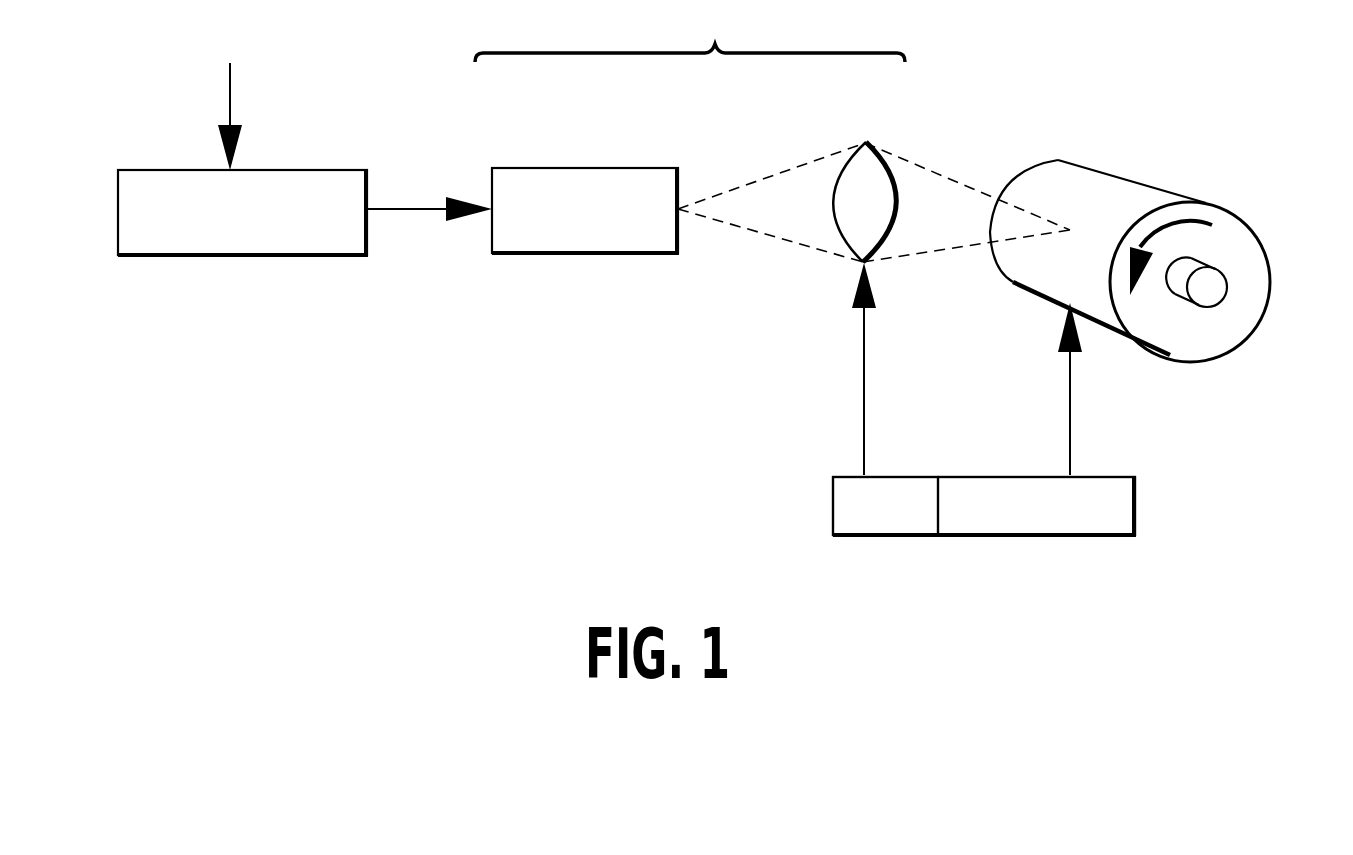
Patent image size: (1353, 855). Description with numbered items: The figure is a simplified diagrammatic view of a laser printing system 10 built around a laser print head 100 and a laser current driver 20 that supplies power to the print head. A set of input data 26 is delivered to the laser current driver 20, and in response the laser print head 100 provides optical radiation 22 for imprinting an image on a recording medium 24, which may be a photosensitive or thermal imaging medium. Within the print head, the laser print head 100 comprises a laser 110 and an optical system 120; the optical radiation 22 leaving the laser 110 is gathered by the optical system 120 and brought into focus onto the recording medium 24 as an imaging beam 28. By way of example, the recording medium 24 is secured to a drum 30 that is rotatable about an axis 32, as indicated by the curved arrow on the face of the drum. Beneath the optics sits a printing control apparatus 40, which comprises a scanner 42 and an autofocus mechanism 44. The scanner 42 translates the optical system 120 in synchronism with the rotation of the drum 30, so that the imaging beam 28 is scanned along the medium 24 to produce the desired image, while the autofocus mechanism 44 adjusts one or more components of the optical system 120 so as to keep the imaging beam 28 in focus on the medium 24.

The laser printing system 10 is at (376, 506).
The laser current driver 20 is at (222, 258).
The optical radiation 22 is at (757, 174).
The recording medium 24 is at (1108, 193).
The input data 26 is at (293, 105).
The imaging beam 28 is at (937, 254).
The drum 30 is at (1242, 252).
The axis 32 is at (1215, 294).
The printing control apparatus 40 is at (818, 473).
The scanner 42 is at (1137, 533).
The autofocus mechanism 44 is at (941, 537).
The laser print head 100 is at (690, 33).
The laser 110 is at (560, 255).
The optical system 120 is at (867, 142).